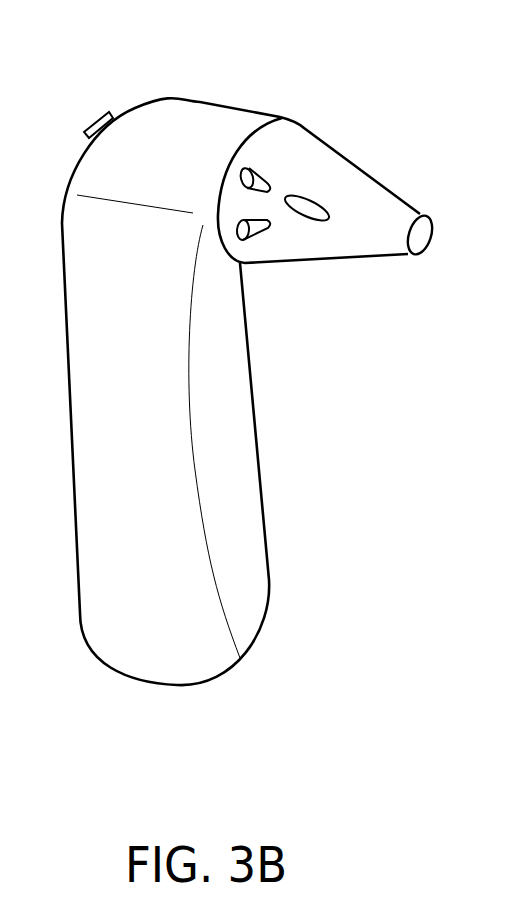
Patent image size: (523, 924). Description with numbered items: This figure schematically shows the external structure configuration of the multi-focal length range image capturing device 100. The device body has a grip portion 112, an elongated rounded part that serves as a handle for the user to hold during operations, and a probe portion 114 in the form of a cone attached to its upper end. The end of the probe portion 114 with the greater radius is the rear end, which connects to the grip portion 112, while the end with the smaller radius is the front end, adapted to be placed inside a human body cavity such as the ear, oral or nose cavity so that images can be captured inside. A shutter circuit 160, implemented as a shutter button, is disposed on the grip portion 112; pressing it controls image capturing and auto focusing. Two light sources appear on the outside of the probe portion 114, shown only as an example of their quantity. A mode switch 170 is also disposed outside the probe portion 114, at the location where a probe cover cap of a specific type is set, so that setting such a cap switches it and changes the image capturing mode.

The multi-focal length range image capturing device 100 is at (247, 393).
The grip portion 112 is at (181, 140).
The probe portion 114 is at (343, 175).
The shutter circuit 160 is at (93, 123).
The mode switch 170 is at (333, 217).